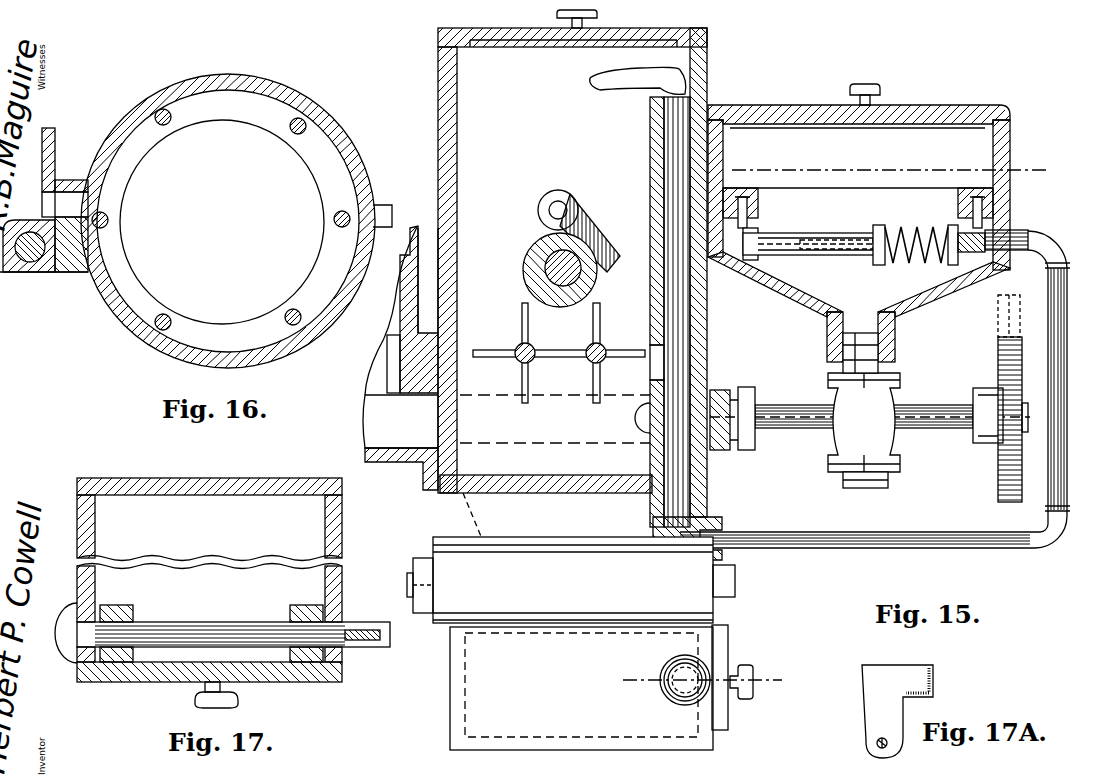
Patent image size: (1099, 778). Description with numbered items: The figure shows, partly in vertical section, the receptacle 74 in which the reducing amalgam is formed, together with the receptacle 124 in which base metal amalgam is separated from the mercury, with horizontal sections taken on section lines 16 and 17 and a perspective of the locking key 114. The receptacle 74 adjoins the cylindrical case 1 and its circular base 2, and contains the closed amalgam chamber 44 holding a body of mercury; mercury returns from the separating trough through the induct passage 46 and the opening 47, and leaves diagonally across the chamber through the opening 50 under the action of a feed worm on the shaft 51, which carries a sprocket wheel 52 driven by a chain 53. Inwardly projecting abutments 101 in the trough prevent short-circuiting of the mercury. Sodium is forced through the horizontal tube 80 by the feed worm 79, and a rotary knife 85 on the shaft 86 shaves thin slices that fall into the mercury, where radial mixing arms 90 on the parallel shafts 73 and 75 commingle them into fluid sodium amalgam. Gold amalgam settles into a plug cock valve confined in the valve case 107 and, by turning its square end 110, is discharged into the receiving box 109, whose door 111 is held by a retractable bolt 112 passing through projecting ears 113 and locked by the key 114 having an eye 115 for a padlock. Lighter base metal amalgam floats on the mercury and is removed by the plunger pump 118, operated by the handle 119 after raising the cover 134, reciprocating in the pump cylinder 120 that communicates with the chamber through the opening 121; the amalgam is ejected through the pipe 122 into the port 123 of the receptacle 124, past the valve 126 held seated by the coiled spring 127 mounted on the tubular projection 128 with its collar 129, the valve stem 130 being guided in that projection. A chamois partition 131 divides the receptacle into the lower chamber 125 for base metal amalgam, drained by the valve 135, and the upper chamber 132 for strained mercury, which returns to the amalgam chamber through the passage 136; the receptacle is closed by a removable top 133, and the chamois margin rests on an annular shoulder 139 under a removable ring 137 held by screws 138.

In FIG. 15, the cylindrical case 1 is at (419, 226).
In FIG. 15, the circular base 2 is at (419, 309).
In FIG. 15, the section line 16 is at (688, 171).
In FIG. 15, the section line 17 is at (705, 680).
In FIG. 15, the amalgam chamber 44 is at (572, 260).
In FIG. 15, the induct passage 46 is at (400, 358).
In FIG. 15, the opening 47 is at (448, 425).
In FIG. 15, the opening 50 is at (645, 429).
In FIG. 15, the shaft 51 is at (936, 410).
In FIG. 15, the sprocket wheel 52 is at (1000, 365).
In FIG. 15, the chain 53 is at (1000, 325).
In FIG. 15, the shaft 73 is at (530, 348).
In FIG. 16, the receptacle 74 is at (58, 140).
In FIG. 15, the shaft 75 is at (602, 348).
In FIG. 15, the feed worm 79 is at (578, 280).
In FIG. 15, the horizontal tube 80 is at (523, 270).
In FIG. 15, the rotary knife 85 is at (614, 262).
In FIG. 15, the shaft 86 is at (556, 208).
In FIG. 15, the radial mixing arms 90 is at (521, 330).
In FIG. 15, the abutments 101 is at (387, 373).
In FIG. 15, the valve case 107 is at (560, 580).
In FIG. 17, the receiving box 109 is at (333, 521).
In FIG. 15, the receiving box 109 is at (581, 688).
In FIG. 15, the square end 110 is at (735, 579).
In FIG. 17, the door 111 is at (262, 675).
In FIG. 15, the door 111 is at (728, 646).
In FIG. 17, the retractable bolt 112 is at (208, 626).
In FIG. 15, the retractable bolt 112 is at (671, 691).
In FIG. 17, the projecting ears 113 is at (122, 603).
In FIG. 17, the locking key 114 is at (372, 642).
In FIG. 17A, the locking key 114 is at (897, 711).
In FIG. 17A, the eye 115 is at (877, 745).
In FIG. 16, the plunger pump 118 is at (37, 262).
In FIG. 15, the plunger pump 118 is at (680, 313).
In FIG. 15, the handle 119 is at (609, 83).
In FIG. 15, the pump cylinder 120 is at (650, 213).
In FIG. 15, the opening 121 is at (657, 367).
In FIG. 15, the pipe 122 is at (823, 532).
In FIG. 15, the port 123 is at (975, 246).
In FIG. 16, the receptacle 124 is at (343, 133).
In FIG. 15, the receptacle 124 is at (1010, 192).
In FIG. 15, the chamber 125 is at (886, 306).
In FIG. 15, the valve 126 is at (938, 282).
In FIG. 15, the coiled spring 127 is at (913, 266).
In FIG. 15, the tubular projection 128 is at (800, 256).
In FIG. 15, the collar 129 is at (875, 257).
In FIG. 15, the stem 130 is at (918, 229).
In FIG. 15, the partition 131 is at (840, 233).
In FIG. 15, the upper chamber 132 is at (859, 134).
In FIG. 15, the removable top 133 is at (922, 103).
In FIG. 15, the cover 134 is at (569, 47).
In FIG. 15, the valve 135 is at (885, 438).
In FIG. 16, the passage 136 is at (72, 203).
In FIG. 16, the removable ring 137 is at (323, 182).
In FIG. 16, the screws 138 is at (287, 313).
In FIG. 15, the screws 138 is at (860, 200).
In FIG. 15, the annular shoulder 139 is at (760, 233).